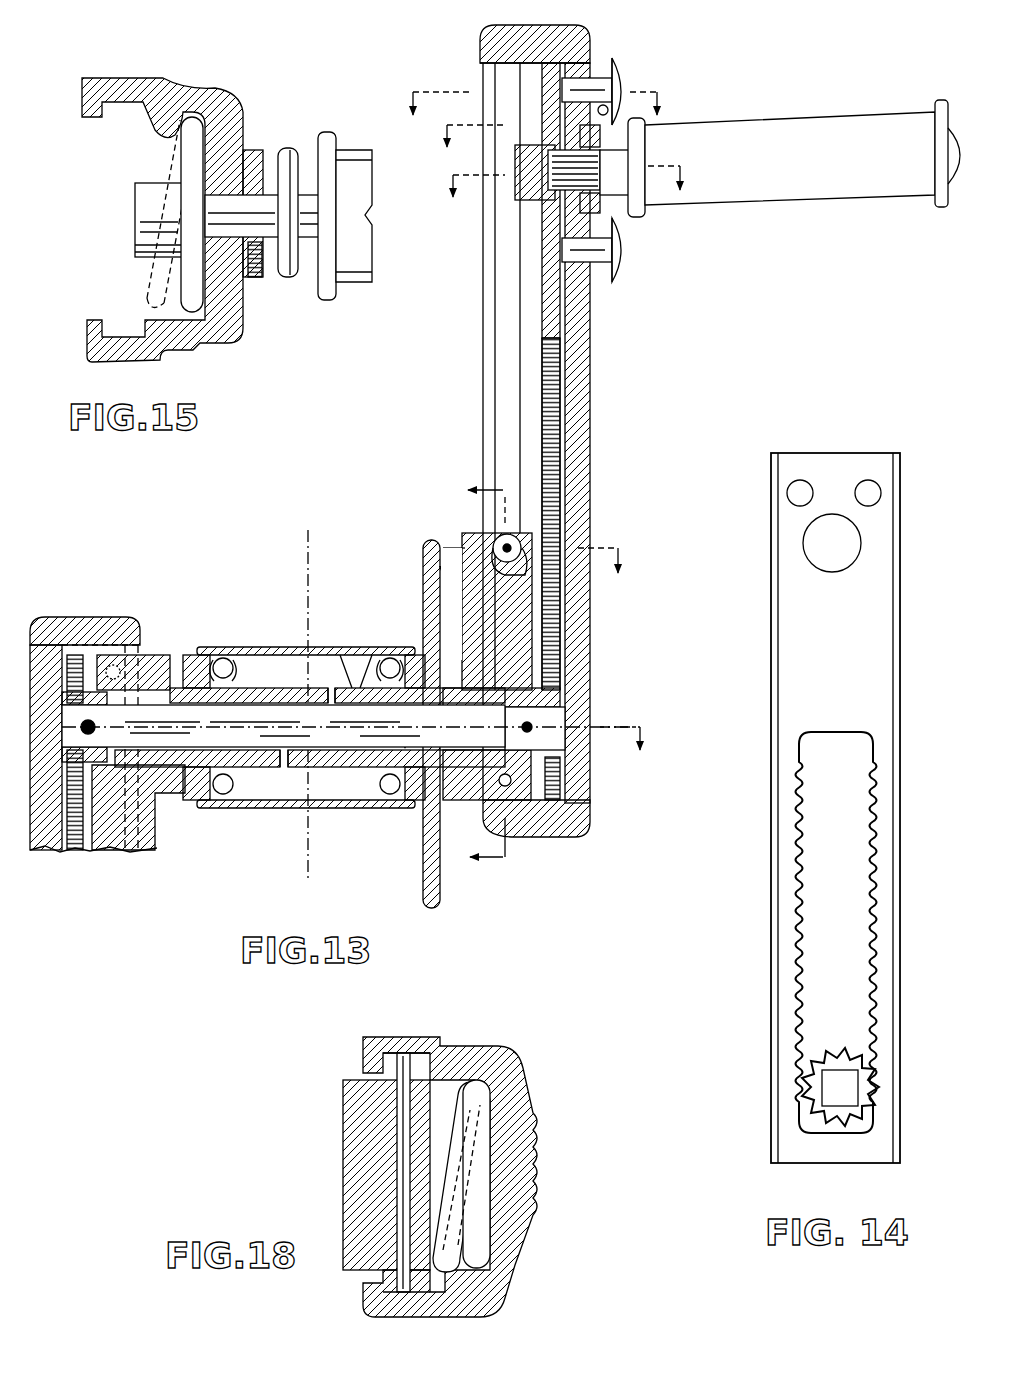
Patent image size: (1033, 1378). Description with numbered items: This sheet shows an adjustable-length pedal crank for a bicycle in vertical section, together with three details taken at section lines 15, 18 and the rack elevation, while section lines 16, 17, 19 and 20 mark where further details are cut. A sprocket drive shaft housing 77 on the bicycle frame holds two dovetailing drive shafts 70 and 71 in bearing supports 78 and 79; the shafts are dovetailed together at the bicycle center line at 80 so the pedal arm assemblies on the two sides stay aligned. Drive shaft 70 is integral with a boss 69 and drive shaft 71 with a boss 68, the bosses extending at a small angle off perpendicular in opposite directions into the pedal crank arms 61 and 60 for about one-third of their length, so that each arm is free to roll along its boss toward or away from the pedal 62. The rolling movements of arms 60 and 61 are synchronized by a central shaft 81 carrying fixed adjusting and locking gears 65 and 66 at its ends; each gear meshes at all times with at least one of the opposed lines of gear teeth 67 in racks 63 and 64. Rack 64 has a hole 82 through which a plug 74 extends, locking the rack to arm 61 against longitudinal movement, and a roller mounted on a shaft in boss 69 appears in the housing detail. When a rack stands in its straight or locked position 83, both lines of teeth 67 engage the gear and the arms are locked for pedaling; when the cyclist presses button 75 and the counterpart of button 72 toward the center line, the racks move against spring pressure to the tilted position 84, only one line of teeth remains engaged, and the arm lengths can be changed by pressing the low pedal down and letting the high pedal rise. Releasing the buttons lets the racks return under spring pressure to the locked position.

In FIG. 13, the pedal crank arm 60 is at (46, 850).
In FIG. 13, the pedal crank arm 61 is at (590, 364).
In FIG. 15, the pedal crank arm 61 is at (228, 108).
In FIG. 18, the pedal crank arm 61 is at (500, 1050).
In FIG. 13, the pedal 62 is at (834, 120).
In FIG. 15, the pedal 62 is at (352, 150).
In FIG. 13, the rack 63 is at (75, 850).
In FIG. 14, the rack 63 is at (886, 664).
In FIG. 13, the rack 64 is at (552, 320).
In FIG. 14, the rack 64 is at (835, 808).
In FIG. 13, the adjusting and locking gear 65 is at (118, 733).
In FIG. 14, the adjusting and locking gear 65 is at (840, 1088).
In FIG. 13, the adjusting and locking gear 66 is at (560, 701).
In FIG. 14, the adjusting and locking gear 66 is at (862, 1078).
In FIG. 13, the gear teeth 67 is at (551, 514).
In FIG. 14, the gear teeth 67 is at (860, 800).
In FIG. 13, the boss 68 is at (152, 852).
In FIG. 13, the boss 69 is at (478, 532).
In FIG. 18, the boss 69 is at (343, 1100).
In FIG. 13, the drive shaft 70 is at (358, 654).
In FIG. 13, the drive shaft 71 is at (332, 687).
In FIG. 13, the button 72 is at (625, 264).
In FIG. 13, the plug 74 is at (520, 186).
In FIG. 15, the plug 74 is at (135, 222).
In FIG. 13, the button 75 is at (616, 76).
In FIG. 15, the button 75 is at (290, 150).
In FIG. 13, the sprocket drive shaft housing 77 is at (360, 810).
In FIG. 13, the bearing support 78 is at (224, 657).
In FIG. 13, the bearing support 79 is at (392, 654).
In FIG. 13, the dovetail joint 80 is at (308, 852).
In FIG. 13, the central shaft 81 is at (276, 714).
In FIG. 13, the hole 82 is at (538, 200).
In FIG. 14, the hole 82 is at (860, 537).
In FIG. 15, the straight or locked position 83 is at (194, 308).
In FIG. 18, the straight or locked position 83 is at (470, 1265).
In FIG. 15, the tilted position 84 is at (148, 282).
In FIG. 18, the tilted position 84 is at (455, 1283).
In FIG. 13, the section line 15— 15 is at (532, 91).
In FIG. 13, the section line 16— 16 is at (523, 731).
In FIG. 13, the section line 17— 17 is at (566, 169).
In FIG. 13, the section line 18— 18 is at (530, 551).
In FIG. 13, the section line 19— 19 is at (498, 667).
In FIG. 13, the section line 20— 20 is at (469, 125).
In FIG. 15, the section line 20— 20 is at (253, 213).